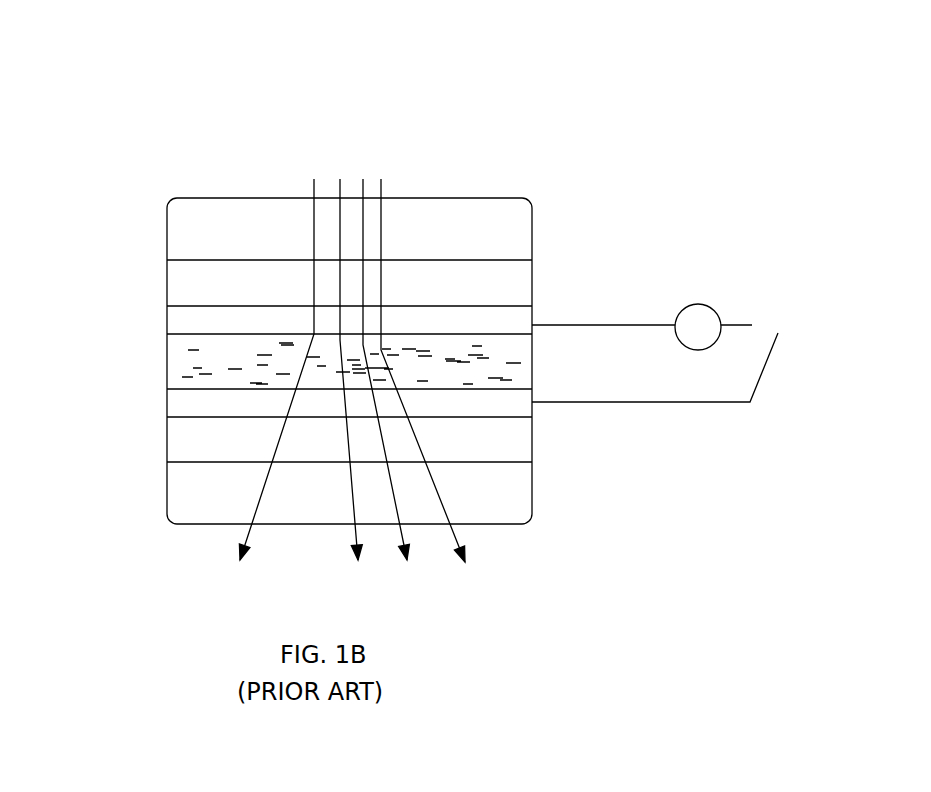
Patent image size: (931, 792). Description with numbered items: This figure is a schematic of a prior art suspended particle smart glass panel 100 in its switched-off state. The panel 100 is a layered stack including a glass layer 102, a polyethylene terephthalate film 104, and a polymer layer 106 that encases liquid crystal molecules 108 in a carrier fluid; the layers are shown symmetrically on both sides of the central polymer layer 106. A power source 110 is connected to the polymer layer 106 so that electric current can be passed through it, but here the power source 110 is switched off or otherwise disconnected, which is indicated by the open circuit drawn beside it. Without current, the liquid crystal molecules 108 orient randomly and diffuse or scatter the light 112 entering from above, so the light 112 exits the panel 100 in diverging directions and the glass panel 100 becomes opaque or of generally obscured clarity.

The suspended particle smart glass panel 100 is at (585, 70).
The glass layer 102 is at (532, 233).
The polyethylene terephthalate film 104 is at (532, 290).
The polymer layer 106 is at (532, 316).
The liquid crystal molecules 108 is at (200, 347).
The power source 110 is at (716, 311).
The light 112 is at (365, 185).